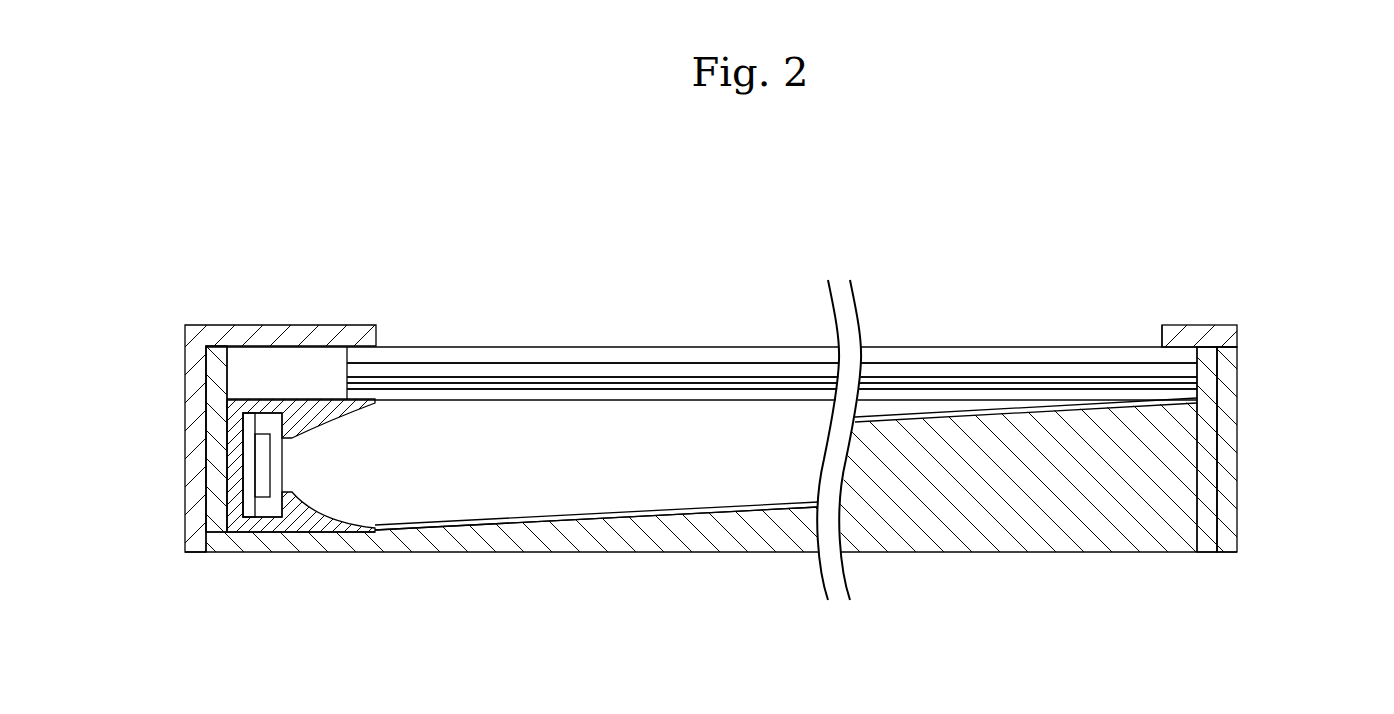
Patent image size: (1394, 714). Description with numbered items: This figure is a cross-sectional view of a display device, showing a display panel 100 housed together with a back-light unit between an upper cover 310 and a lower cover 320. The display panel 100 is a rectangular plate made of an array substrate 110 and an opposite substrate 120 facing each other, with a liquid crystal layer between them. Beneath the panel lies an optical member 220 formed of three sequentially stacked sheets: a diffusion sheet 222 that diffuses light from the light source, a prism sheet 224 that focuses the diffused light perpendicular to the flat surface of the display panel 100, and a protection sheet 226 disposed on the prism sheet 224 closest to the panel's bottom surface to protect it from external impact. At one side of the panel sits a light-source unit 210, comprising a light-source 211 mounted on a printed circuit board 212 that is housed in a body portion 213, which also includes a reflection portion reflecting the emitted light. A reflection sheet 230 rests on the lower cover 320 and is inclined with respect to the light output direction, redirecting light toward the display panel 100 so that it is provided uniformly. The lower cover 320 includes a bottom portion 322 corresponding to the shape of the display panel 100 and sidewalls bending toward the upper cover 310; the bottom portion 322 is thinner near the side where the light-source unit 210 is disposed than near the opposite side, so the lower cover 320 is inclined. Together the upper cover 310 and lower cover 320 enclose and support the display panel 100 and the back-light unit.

The display panel 100 is at (721, 321).
The array substrate 110 is at (995, 287).
The opposite substrate 120 is at (1002, 352).
The light-source unit 210 is at (168, 471).
The light-source 211 is at (262, 478).
The printed circuit board 212 is at (247, 462).
The body portion 213 is at (228, 431).
The optical member 220 is at (801, 388).
The diffusion sheet 222 is at (1190, 397).
The prism sheet 224 is at (1190, 390).
The protection sheet 226 is at (1190, 383).
The reflection sheet 230 is at (525, 520).
The upper cover 310 is at (305, 332).
The lower cover 320 is at (688, 540).
The bottom portion 322 is at (605, 512).